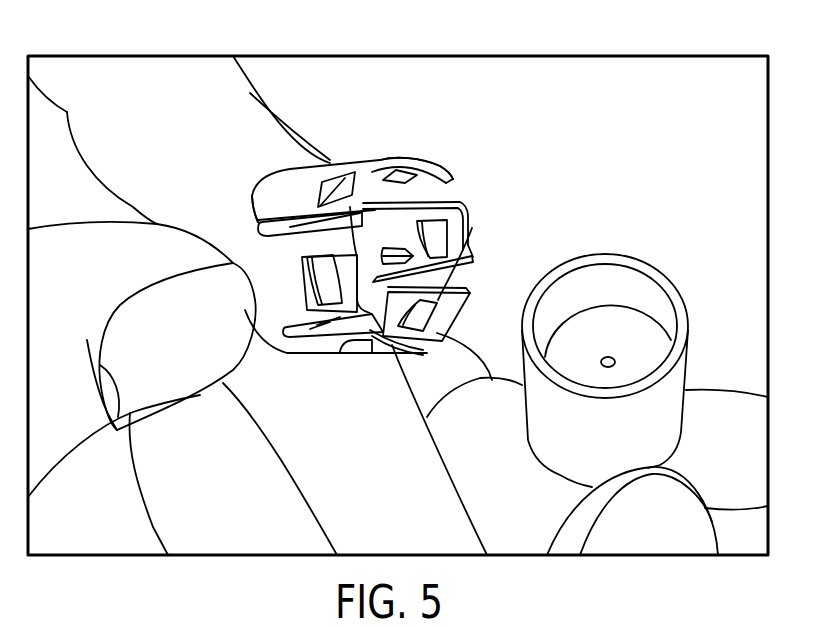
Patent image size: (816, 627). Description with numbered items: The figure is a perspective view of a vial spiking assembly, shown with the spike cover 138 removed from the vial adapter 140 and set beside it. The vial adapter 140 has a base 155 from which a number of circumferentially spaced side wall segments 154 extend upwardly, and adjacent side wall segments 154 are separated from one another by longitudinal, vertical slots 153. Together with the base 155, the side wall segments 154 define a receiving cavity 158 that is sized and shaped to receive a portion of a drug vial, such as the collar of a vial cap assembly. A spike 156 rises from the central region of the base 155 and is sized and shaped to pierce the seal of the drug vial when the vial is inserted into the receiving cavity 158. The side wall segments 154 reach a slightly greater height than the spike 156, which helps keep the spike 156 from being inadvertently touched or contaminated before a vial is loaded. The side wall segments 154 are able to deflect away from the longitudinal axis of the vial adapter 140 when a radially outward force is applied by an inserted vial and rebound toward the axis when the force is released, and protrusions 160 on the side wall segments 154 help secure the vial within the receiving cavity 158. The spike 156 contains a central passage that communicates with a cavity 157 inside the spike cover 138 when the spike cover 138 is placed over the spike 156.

The spike cover 138 is at (567, 443).
The vial adapter 140 is at (404, 160).
The longitudinal/vertical slots 153 is at (262, 197).
The side wall segments 154 is at (450, 167).
The base 155 is at (67, 113).
The spike 156 is at (385, 252).
The cavity 157 is at (613, 357).
The receiving cavity 158 is at (385, 335).
The protrusions 160 is at (316, 307).